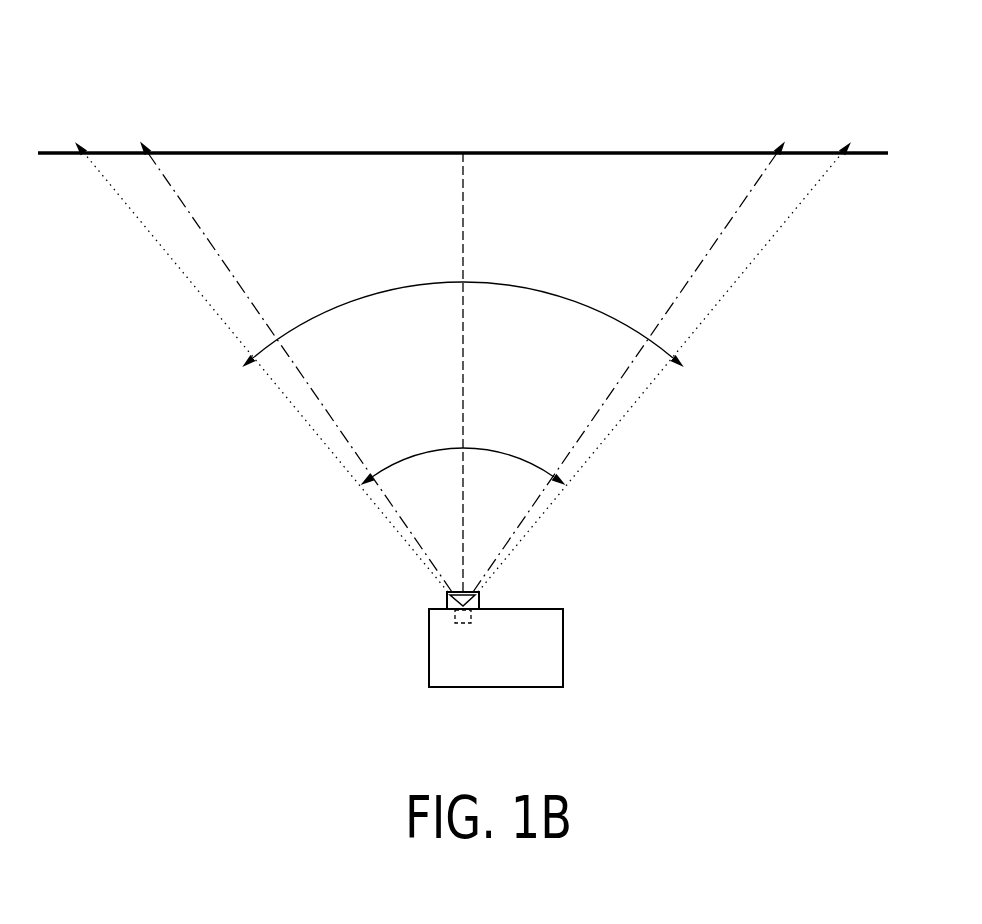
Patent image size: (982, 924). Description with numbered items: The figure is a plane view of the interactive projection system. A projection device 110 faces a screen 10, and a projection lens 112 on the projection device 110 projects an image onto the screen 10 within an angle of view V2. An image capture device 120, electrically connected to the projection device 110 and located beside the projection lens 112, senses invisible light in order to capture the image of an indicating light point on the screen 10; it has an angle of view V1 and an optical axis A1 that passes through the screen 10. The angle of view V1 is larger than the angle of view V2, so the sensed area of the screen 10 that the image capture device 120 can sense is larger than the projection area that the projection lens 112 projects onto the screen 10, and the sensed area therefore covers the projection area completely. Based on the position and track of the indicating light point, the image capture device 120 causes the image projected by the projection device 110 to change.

The screen 10 is at (590, 152).
The optical axis A1 is at (463, 190).
The angle of view V1 is at (522, 290).
The angle of view V2 is at (483, 448).
The projection device 110 is at (563, 642).
The projection lens 112 is at (447, 602).
The image capture device 120 is at (455, 618).